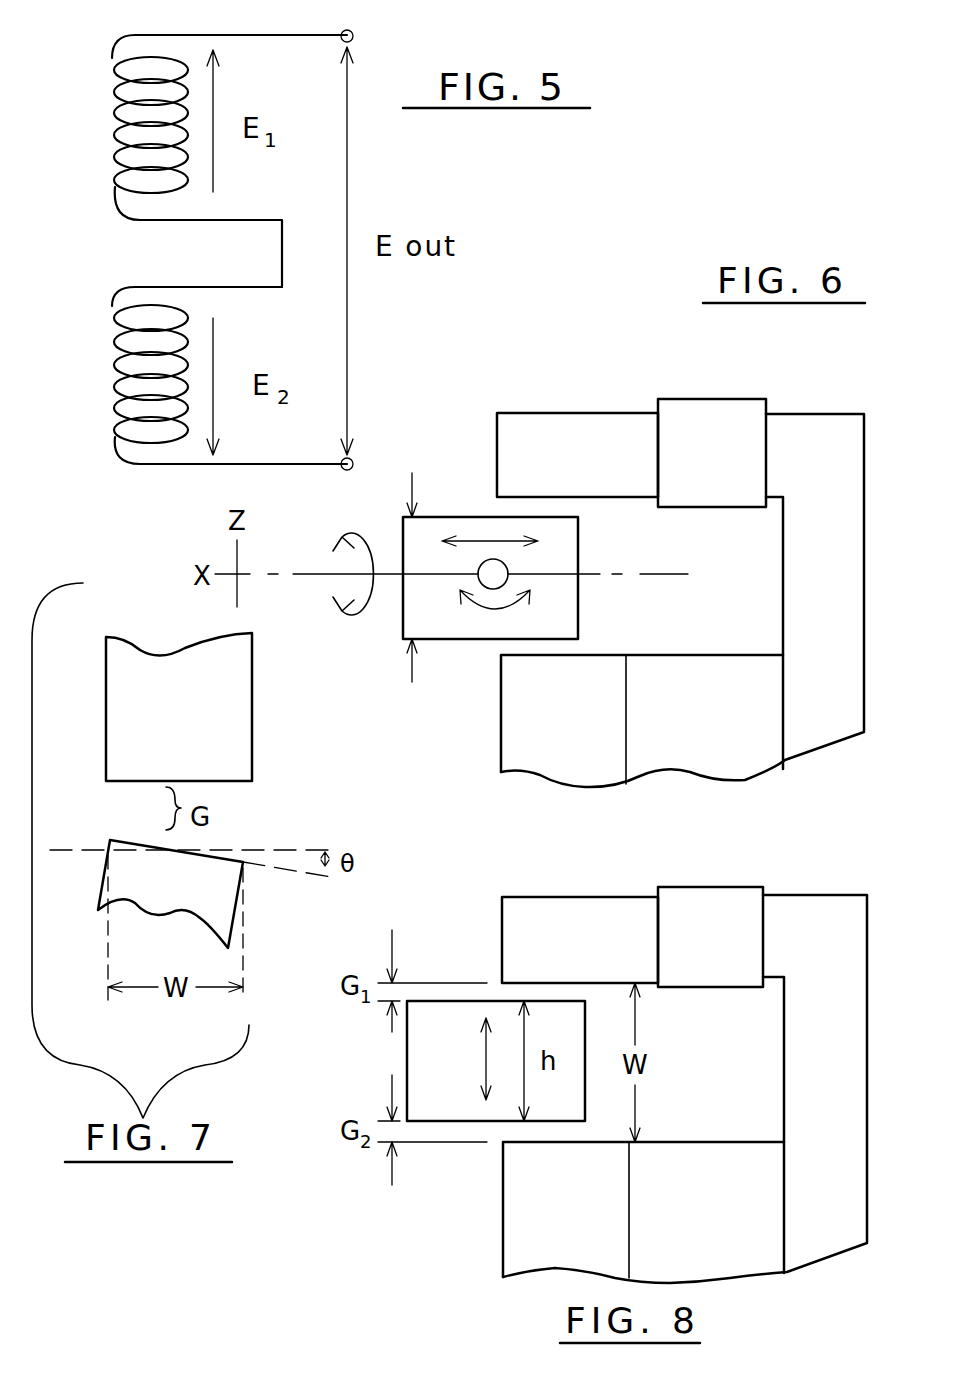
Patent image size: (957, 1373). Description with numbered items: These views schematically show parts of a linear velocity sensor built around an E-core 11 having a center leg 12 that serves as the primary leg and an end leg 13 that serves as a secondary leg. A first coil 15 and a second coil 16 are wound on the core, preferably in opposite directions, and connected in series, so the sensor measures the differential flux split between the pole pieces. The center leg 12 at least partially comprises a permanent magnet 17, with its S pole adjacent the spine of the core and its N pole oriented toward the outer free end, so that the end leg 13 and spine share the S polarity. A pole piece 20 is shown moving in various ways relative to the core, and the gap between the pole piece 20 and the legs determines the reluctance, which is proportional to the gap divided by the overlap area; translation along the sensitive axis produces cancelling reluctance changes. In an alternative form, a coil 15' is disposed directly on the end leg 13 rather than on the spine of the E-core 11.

In FIG. 6, the E-core 11 is at (879, 601).
In FIG. 8, the E-core 11 is at (878, 1066).
In FIG. 6, the center leg 12 is at (518, 717).
In FIG. 6, the end leg 13 is at (546, 412).
In FIG. 7, the end leg 13 is at (230, 737).
In FIG. 8, the end leg 13 is at (583, 910).
In FIG. 5, the first coil 15 is at (202, 161).
In FIG. 5, the second coil 16 is at (114, 397).
In FIG. 6, the coil 15' is at (712, 416).
In FIG. 8, the coil 15' is at (710, 915).
In FIG. 6, the permanent magnet 17 is at (713, 700).
In FIG. 8, the permanent magnet 17 is at (722, 1191).
In FIG. 6, the pole piece 20 is at (470, 517).
In FIG. 7, the pole piece 20 is at (108, 848).